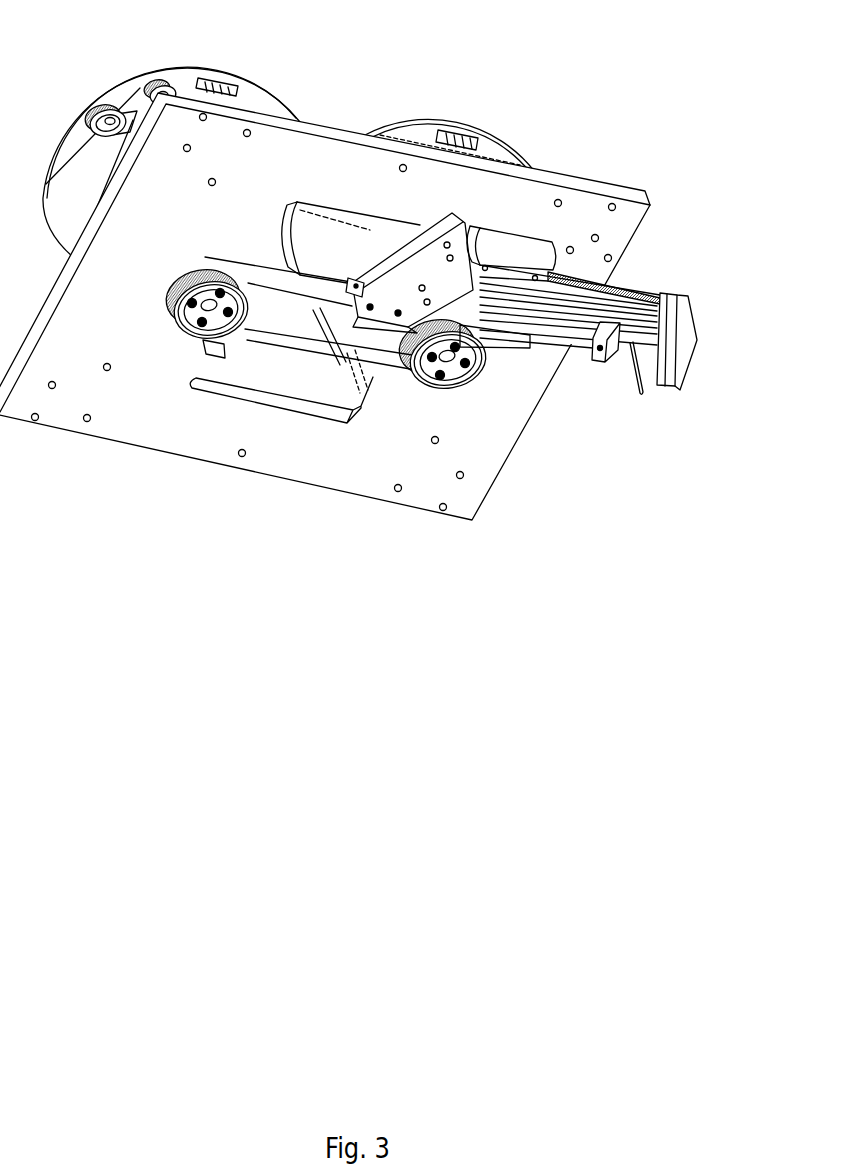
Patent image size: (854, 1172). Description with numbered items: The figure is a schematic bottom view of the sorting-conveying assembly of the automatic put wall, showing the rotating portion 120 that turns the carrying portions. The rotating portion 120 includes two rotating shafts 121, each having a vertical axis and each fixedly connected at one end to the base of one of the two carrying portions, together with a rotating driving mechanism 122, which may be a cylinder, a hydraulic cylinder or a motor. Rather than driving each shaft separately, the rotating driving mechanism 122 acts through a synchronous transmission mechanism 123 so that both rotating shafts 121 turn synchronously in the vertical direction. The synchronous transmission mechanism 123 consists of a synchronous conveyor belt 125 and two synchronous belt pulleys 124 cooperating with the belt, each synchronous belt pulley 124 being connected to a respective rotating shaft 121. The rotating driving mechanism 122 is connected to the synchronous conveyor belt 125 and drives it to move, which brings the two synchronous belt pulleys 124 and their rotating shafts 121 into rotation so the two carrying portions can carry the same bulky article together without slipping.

The rotating portion 120 is at (381, 508).
The rotating shaft 121 is at (183, 327).
The rotating driving mechanism 122 is at (578, 461).
The synchronous transmission mechanism 123 is at (326, 461).
The synchronous belt pulley 124 is at (213, 305).
The synchronous conveyor belt 125 is at (308, 310).